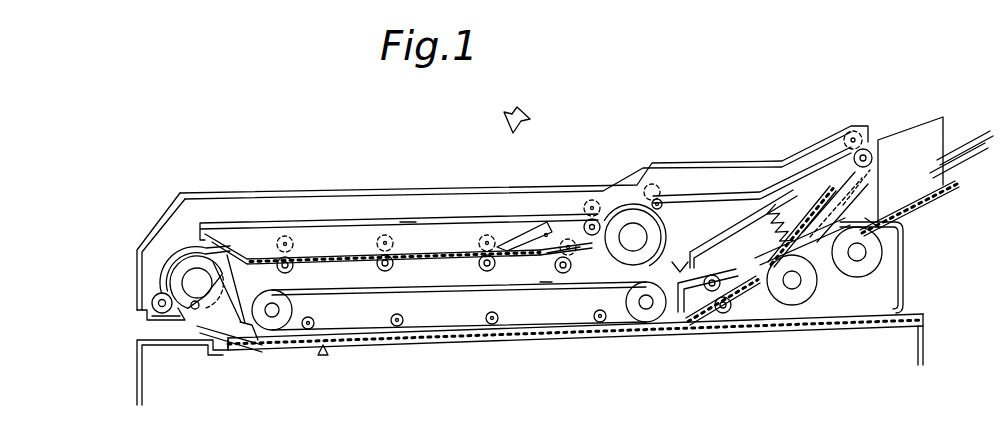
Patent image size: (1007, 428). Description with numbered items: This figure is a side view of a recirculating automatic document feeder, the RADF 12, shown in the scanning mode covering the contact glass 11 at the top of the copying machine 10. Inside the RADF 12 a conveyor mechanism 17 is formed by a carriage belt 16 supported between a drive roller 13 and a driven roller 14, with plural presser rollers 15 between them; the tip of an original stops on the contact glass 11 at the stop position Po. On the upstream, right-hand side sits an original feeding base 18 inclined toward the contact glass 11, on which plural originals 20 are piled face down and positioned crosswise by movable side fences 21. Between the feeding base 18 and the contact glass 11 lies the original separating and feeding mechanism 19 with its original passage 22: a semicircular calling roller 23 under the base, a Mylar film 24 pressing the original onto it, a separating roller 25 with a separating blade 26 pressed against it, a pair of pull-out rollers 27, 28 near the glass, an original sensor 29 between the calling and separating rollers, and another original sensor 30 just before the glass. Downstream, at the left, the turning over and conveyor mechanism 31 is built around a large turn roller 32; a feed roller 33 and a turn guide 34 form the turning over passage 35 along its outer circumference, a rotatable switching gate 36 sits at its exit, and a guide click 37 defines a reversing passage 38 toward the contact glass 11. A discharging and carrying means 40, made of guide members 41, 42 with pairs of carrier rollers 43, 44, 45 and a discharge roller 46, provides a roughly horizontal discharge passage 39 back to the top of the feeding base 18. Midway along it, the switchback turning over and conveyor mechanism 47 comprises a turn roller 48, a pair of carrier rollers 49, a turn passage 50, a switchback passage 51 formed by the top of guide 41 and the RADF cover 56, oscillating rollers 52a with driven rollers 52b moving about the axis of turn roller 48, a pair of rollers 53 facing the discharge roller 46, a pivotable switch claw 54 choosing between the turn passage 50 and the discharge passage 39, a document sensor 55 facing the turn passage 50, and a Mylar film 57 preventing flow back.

The copying machine 10 is at (137, 360).
The contact glass 11 is at (525, 342).
The RADF 12 is at (521, 110).
The drive roller 13 is at (645, 320).
The driven roller 14 is at (272, 322).
The presser rollers 15 is at (308, 330).
The carriage belt 16 is at (437, 294).
The conveyor mechanism 17 is at (465, 320).
The original feeding base 18 is at (948, 198).
The original separating and feeding mechanism 19 is at (790, 306).
The originals 20 is at (963, 130).
The movable side fences 21 is at (910, 145).
The original passage 22 is at (752, 284).
The calling roller 23 is at (863, 270).
The Mylar film 24 is at (870, 223).
The separating roller 25 is at (812, 292).
The separating blade 26 is at (803, 210).
The pull-out roller 27 is at (705, 300).
The pull-out roller 28 is at (730, 313).
The original sensor 29 is at (833, 286).
The original sensor 30 is at (668, 330).
The turning over and conveyor mechanism 31 is at (158, 282).
The turn roller 32 is at (163, 262).
The feed roller 33 is at (162, 322).
The turn guide 34 is at (183, 225).
The turning over passage 35 is at (152, 303).
The switching gate 36 is at (195, 232).
The guide click 37 is at (222, 330).
The reversing passage 38 is at (237, 328).
The discharge passage 39 is at (347, 248).
The discharging and carrying means 40 is at (434, 250).
The guide member 41 is at (318, 228).
The guide member 42 is at (465, 250).
The carrier rollers 43 is at (267, 258).
The carrier rollers 44 is at (376, 255).
The carrier rollers 45 is at (510, 245).
The discharge roller 46 is at (866, 149).
The switchback turning over and conveyor mechanism 47 is at (592, 257).
The turn roller 48 is at (650, 192).
The carrier rollers 49 is at (546, 292).
The turn passage 50 is at (678, 223).
The switchback passage 51 is at (408, 220).
The oscillating rollers 52a is at (602, 222).
The driven rollers 52b is at (590, 200).
The pair of rollers 53 is at (643, 203).
The switch claw 54 is at (538, 232).
The document sensor 55 is at (680, 256).
The RADF cover 56 is at (236, 190).
The Mylar film 57 is at (551, 250).
The stop position Po is at (326, 363).